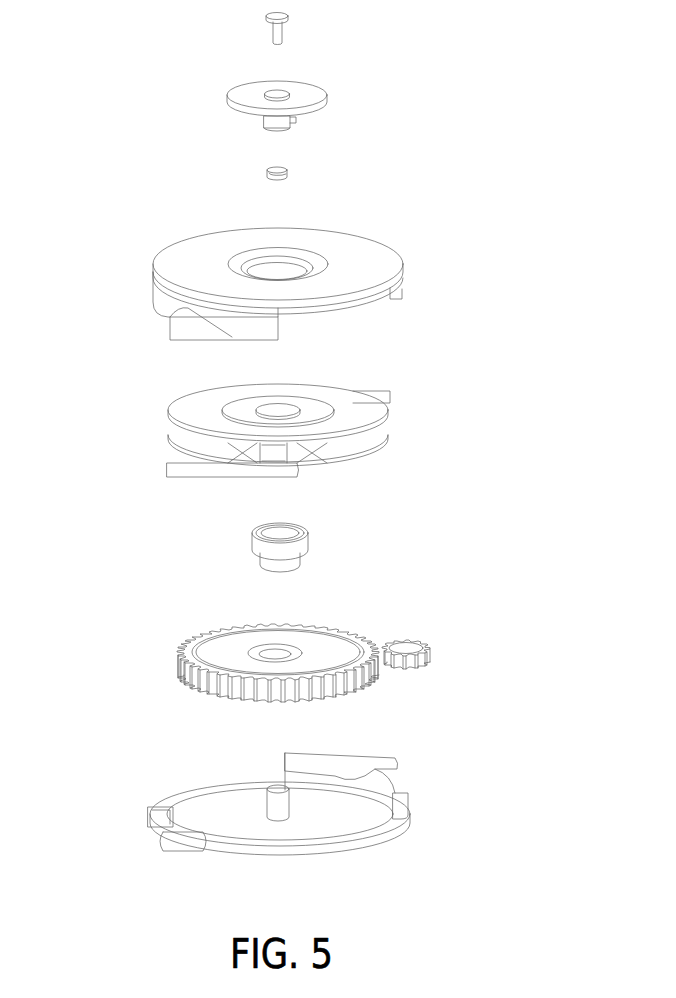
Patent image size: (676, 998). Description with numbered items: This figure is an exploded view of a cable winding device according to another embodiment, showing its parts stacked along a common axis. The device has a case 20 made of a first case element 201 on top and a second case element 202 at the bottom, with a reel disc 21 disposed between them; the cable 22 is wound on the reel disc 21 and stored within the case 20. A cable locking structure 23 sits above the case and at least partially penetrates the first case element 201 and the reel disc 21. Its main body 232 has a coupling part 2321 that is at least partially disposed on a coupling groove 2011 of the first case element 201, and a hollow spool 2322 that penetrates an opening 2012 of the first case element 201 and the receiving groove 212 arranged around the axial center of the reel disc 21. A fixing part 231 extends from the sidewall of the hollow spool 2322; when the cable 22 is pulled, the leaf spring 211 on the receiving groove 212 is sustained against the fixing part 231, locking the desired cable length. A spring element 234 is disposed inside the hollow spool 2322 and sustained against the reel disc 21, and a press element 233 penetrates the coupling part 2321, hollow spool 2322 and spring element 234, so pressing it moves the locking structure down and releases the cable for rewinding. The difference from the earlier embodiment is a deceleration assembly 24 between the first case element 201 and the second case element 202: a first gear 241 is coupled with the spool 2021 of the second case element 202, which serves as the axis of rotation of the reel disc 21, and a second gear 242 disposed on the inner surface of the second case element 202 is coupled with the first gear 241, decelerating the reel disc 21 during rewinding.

The case 20 is at (548, 397).
The first case element 201 is at (421, 282).
The coupling groove 2011 is at (283, 280).
The opening 2012 is at (267, 257).
The second case element 202 is at (445, 770).
The spool 2021 is at (277, 812).
The reel disc 21 is at (331, 377).
The leaf spring 211 is at (287, 417).
The receiving groove 212 is at (291, 398).
The cable 22 is at (307, 486).
The cable locking structure 23 is at (478, 15).
The fixing part 231 is at (292, 122).
The main body 232 is at (346, 108).
The coupling part 2321 is at (313, 95).
The hollow spool 2322 is at (277, 123).
The press element 233 is at (285, 33).
The spring element 234 is at (285, 178).
The deceleration assembly 24 is at (45, 605).
The first gear 241 is at (277, 653).
The second gear 242 is at (390, 647).